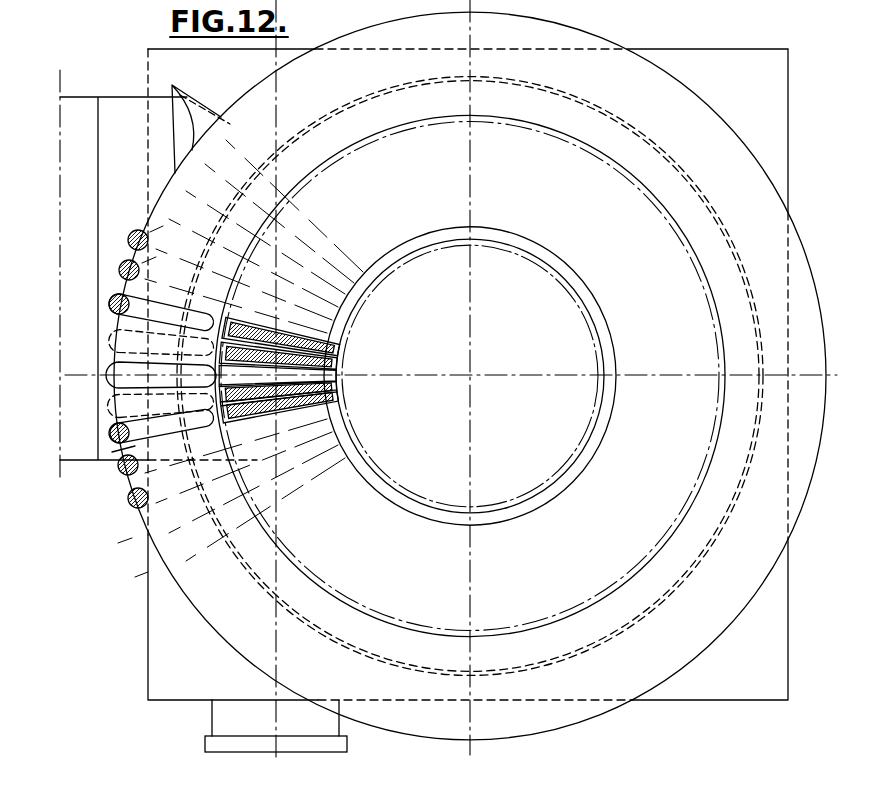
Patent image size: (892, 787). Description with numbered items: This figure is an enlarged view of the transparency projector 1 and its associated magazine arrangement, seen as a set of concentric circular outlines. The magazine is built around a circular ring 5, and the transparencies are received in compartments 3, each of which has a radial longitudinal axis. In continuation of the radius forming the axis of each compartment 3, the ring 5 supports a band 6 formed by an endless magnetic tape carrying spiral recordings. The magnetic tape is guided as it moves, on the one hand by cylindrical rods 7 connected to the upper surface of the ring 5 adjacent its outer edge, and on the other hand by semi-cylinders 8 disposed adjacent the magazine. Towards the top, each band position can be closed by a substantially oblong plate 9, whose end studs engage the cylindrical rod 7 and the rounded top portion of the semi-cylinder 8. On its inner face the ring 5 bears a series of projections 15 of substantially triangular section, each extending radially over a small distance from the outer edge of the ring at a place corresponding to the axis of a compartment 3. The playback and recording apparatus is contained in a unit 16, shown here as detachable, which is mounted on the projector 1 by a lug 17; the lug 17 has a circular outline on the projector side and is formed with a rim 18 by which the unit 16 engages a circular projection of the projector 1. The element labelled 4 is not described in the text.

The transparency projector 1 is at (744, 60).
The compartments 3 is at (343, 368).
The mounting foot 4 is at (212, 725).
The circular ring 5 is at (594, 33).
The band 6 is at (112, 452).
The cylindrical rods 7 is at (128, 232).
The semi-cylinders 8 is at (224, 280).
The oblong plate 9 is at (110, 312).
The projections 15 is at (195, 113).
The unit 16 is at (75, 92).
The lug 17 is at (117, 108).
The rim 18 is at (286, 155).